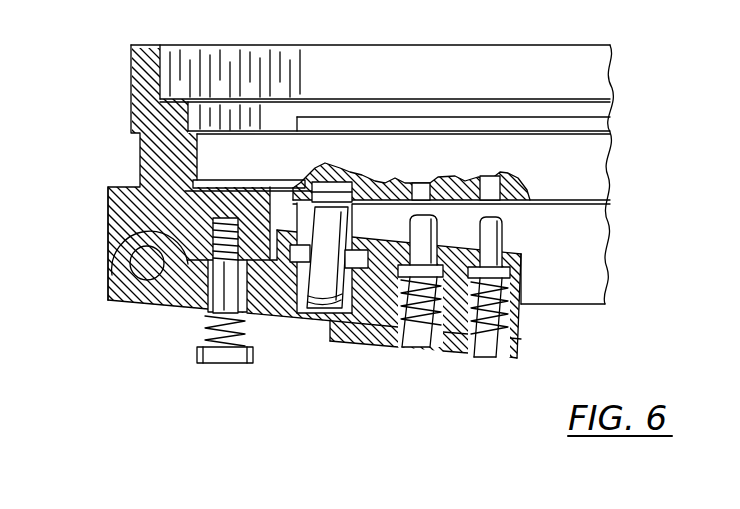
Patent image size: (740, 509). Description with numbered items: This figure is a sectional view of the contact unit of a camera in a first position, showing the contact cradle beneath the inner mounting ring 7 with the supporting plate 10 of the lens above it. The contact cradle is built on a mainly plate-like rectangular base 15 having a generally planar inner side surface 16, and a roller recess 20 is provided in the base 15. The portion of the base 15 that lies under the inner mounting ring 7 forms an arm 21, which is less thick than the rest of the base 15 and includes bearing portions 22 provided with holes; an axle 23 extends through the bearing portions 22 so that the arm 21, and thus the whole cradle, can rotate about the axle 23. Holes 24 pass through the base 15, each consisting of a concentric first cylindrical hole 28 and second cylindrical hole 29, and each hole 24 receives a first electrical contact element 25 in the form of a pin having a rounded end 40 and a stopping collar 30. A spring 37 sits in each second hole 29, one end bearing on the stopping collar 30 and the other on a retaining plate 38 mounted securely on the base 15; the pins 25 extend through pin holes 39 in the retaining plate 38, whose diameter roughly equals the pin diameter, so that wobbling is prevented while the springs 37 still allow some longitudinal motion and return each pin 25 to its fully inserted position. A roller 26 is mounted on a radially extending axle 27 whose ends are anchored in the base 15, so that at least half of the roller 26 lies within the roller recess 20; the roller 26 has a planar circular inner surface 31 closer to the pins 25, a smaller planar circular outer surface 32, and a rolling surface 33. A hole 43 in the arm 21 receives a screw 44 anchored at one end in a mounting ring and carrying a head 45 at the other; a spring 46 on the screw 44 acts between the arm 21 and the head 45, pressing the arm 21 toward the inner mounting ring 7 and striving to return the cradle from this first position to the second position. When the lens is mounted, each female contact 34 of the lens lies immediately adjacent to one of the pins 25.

The inner mounting ring 7 is at (138, 182).
The supporting plate 10 is at (592, 192).
The base 15 is at (298, 326).
The inner side surface 16 is at (519, 322).
The roller recess 20 is at (322, 323).
The arm 21 is at (170, 307).
The bearing portions 22 is at (106, 254).
The axle 23 is at (147, 263).
The holes 24 is at (388, 278).
The first electrical contact element 25 is at (505, 234).
The roller 26 is at (350, 207).
The axle 27 is at (400, 180).
The first cylindrical hole 28 is at (523, 259).
The second cylindrical hole 29 is at (517, 355).
The stopping collar 30 is at (525, 278).
The inner surface 31 is at (386, 272).
The outer surface 32 is at (290, 180).
The rolling surface 33 is at (313, 182).
The female contacts 34 is at (503, 168).
The spring 37 is at (422, 346).
The retaining plate 38 is at (366, 340).
The pin holes 39 is at (452, 352).
The rounded end 40 is at (482, 218).
The hole 43 is at (273, 318).
The screw 44 is at (200, 292).
The head 45 is at (214, 362).
The spring 46 is at (237, 362).